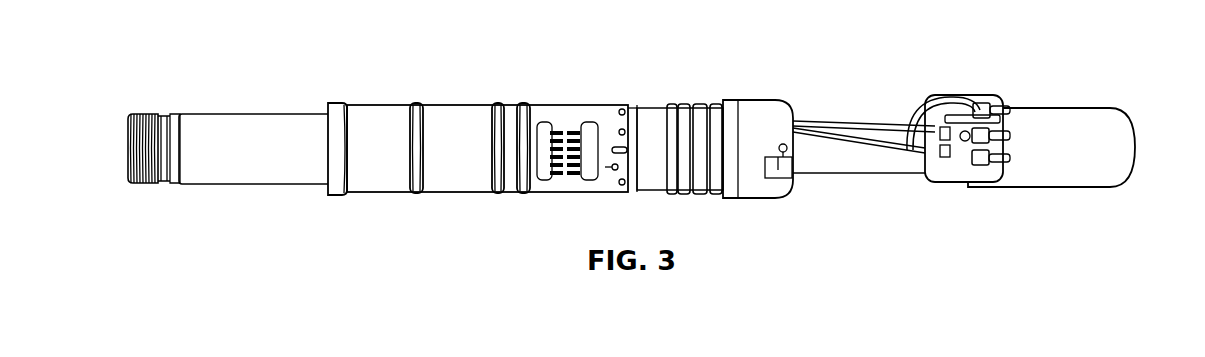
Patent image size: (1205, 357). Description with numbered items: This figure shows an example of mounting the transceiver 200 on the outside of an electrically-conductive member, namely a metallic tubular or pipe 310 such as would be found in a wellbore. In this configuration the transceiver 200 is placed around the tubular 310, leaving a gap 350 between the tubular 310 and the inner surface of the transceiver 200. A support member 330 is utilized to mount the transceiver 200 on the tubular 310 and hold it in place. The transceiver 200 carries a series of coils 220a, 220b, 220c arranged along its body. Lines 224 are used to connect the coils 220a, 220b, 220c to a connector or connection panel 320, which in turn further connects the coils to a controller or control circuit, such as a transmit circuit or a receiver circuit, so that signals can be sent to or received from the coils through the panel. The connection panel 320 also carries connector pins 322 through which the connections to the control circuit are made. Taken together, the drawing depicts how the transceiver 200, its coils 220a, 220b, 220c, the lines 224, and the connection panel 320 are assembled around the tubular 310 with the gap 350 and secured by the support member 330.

The transceiver 200 is at (412, 93).
The tubular 310 is at (235, 125).
The gap 350 is at (333, 117).
The coil 220a is at (363, 115).
The coil 220b is at (450, 178).
The coil 220c is at (515, 183).
The support member 330 is at (693, 115).
The lines 224 is at (840, 132).
The connection panel 320 is at (978, 105).
The connector pins 322 is at (998, 103).